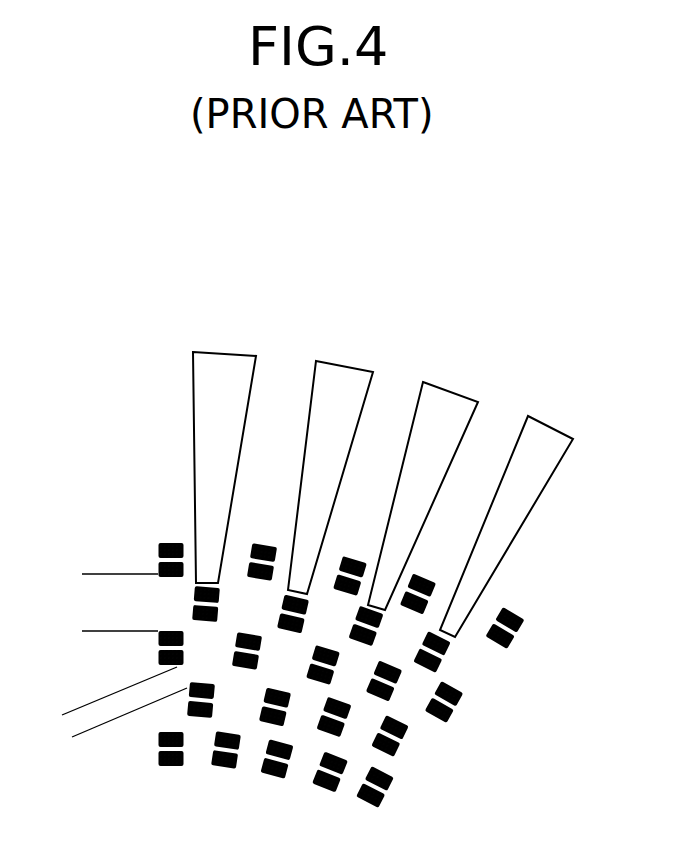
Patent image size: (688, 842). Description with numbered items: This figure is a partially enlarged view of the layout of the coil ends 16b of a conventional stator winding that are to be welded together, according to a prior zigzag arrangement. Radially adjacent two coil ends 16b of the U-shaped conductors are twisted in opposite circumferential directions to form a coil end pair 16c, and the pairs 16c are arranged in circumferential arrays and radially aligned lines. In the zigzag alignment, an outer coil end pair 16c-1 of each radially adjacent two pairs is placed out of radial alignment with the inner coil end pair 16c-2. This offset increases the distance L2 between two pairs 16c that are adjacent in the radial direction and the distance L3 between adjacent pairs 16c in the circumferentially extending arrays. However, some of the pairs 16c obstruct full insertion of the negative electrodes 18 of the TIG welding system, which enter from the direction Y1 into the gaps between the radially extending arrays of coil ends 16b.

The negative electrode 18 is at (343, 370).
The direction Y1 is at (355, 331).
The coil end pair 16c is at (153, 528).
The outer coil end pair 16c-1 is at (546, 635).
The inner coil end pair 16c-2 is at (471, 663).
The coil end 16b is at (397, 787).
The distance between radially adjacent coil end pairs L2 is at (113, 589).
The distance between circumferentially adjacent coil end pairs L3 is at (63, 660).